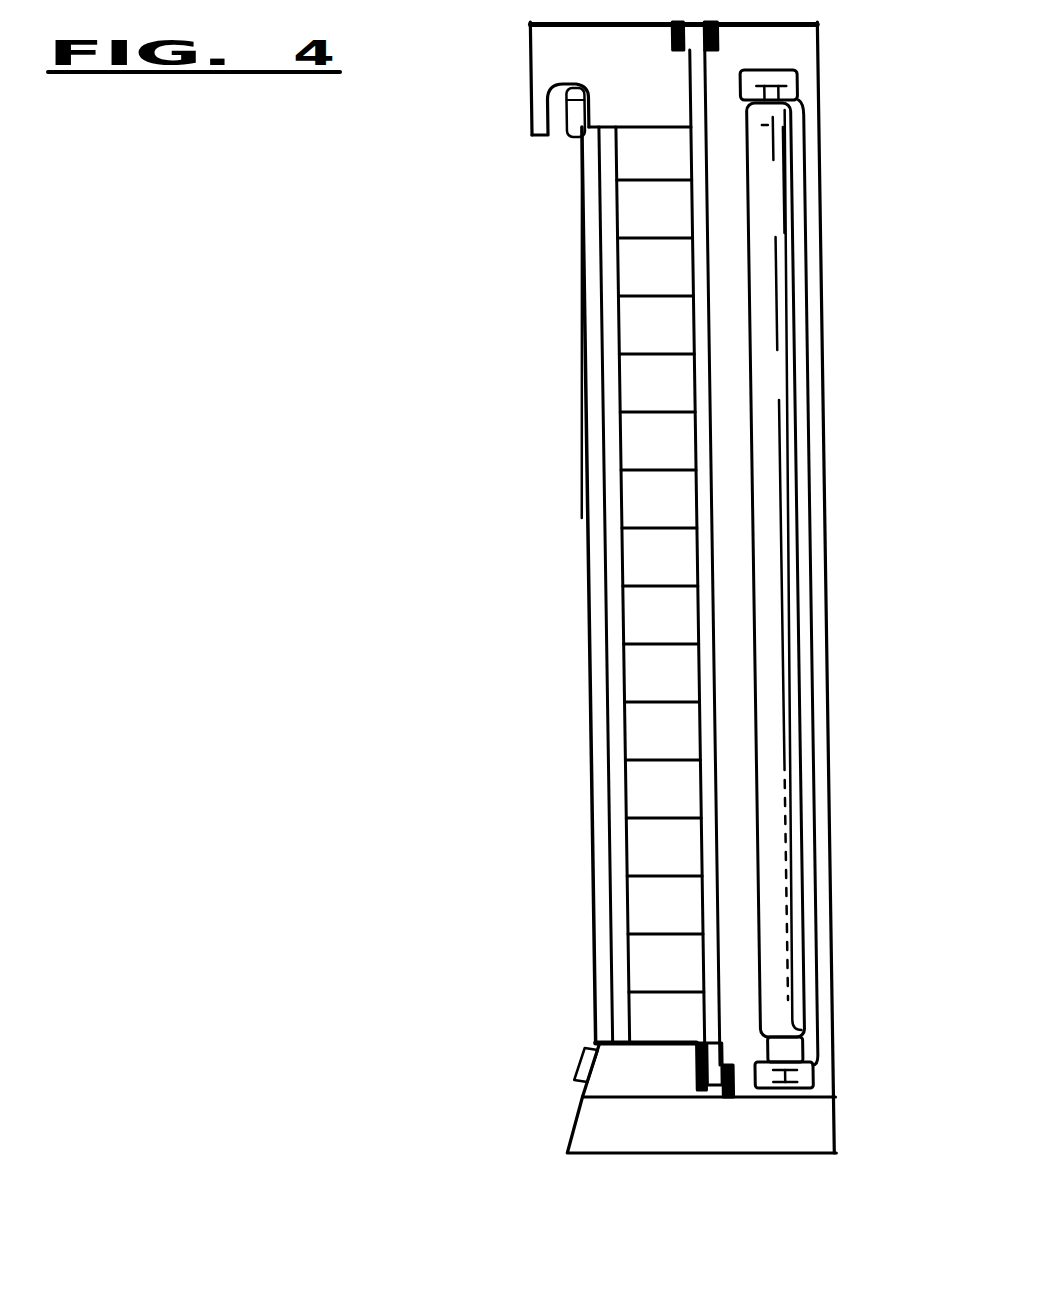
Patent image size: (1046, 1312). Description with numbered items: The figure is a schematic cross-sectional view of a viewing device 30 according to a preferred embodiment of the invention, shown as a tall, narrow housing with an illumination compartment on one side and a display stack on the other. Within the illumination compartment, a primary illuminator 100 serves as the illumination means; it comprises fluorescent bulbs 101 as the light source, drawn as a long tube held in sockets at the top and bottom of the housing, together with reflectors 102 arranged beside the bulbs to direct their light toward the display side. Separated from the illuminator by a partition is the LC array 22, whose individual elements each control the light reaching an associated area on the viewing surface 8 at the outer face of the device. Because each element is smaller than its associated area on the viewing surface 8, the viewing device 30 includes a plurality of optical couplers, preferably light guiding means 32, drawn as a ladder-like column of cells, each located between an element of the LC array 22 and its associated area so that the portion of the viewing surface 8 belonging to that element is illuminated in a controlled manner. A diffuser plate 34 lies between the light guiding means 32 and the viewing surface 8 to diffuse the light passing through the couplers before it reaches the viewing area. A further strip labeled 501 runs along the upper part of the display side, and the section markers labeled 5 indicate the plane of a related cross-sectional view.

The viewing surface 8 is at (591, 590).
The LC array 22 is at (712, 624).
The viewing device 30 is at (562, 553).
The light guiding means 32 is at (620, 212).
The diffuser plate 34 is at (614, 690).
The primary illuminator 100 is at (814, 125).
The fluorescent bulbs 101 is at (788, 250).
The reflectors 102 is at (808, 447).
The guide strip 501 is at (580, 415).
The section line 5- 5 is at (597, 737).